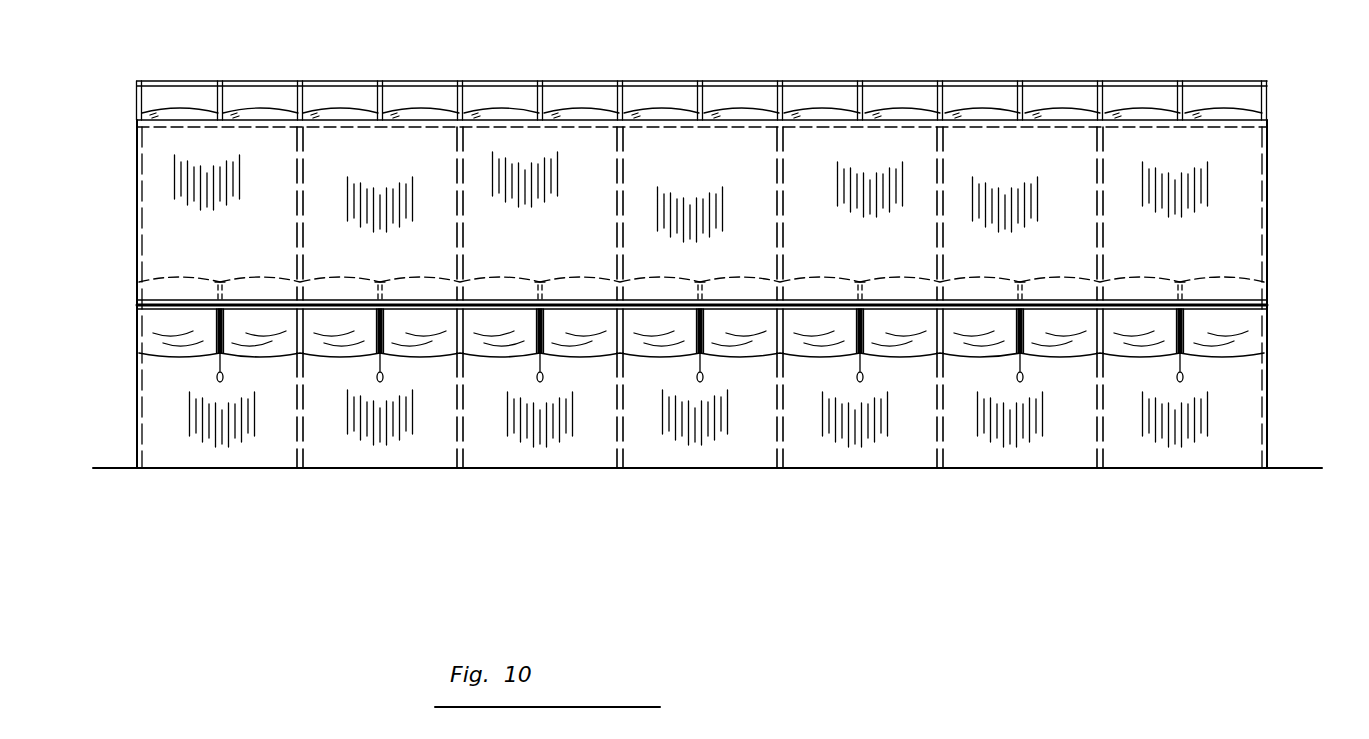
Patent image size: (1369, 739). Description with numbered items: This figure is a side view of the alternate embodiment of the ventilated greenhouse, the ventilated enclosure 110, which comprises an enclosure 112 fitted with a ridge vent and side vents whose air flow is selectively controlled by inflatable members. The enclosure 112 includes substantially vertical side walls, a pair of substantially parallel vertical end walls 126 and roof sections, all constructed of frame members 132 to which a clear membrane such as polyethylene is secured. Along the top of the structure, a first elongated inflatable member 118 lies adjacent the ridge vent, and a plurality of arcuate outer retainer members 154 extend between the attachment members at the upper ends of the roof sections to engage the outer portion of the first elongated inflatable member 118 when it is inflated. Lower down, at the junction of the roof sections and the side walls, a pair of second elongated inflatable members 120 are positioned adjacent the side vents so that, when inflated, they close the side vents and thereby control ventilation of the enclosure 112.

The ventilated enclosure 110 is at (884, 517).
The enclosure 112 is at (1284, 289).
The first elongated inflatable member 118 is at (771, 89).
The second elongated inflatable member 120 is at (1078, 373).
The vertical end wall 126 is at (118, 156).
The frame member 132 is at (1118, 80).
The arcuate outer retainer member 154 is at (378, 98).